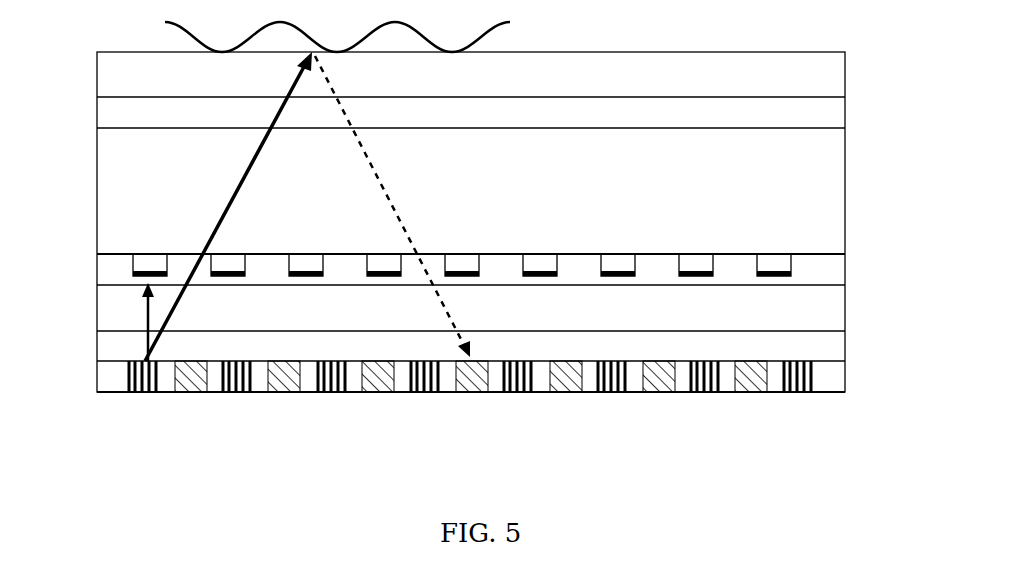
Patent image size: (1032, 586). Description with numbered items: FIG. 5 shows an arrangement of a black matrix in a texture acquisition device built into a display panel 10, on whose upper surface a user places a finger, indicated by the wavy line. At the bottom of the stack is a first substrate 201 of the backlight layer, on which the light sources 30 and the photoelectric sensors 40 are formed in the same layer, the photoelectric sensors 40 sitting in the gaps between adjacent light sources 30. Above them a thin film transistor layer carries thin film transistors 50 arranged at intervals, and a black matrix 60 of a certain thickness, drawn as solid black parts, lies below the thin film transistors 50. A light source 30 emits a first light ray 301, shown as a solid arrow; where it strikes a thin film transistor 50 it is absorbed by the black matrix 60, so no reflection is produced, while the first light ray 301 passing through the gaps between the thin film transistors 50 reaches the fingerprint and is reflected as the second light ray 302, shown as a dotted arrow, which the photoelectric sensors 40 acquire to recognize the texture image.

The display panel 10 is at (874, 208).
The first substrate 201 is at (828, 383).
The light source 30 is at (311, 393).
The photoelectric sensor 40 is at (545, 393).
The thin film transistor 50 is at (540, 262).
The black matrix 60 is at (700, 272).
The first light ray 301 is at (232, 187).
The second light ray 302 is at (383, 183).